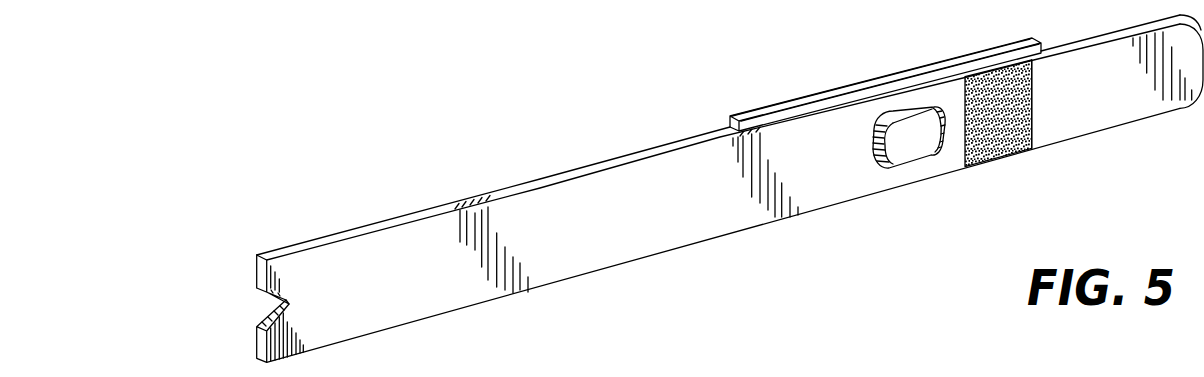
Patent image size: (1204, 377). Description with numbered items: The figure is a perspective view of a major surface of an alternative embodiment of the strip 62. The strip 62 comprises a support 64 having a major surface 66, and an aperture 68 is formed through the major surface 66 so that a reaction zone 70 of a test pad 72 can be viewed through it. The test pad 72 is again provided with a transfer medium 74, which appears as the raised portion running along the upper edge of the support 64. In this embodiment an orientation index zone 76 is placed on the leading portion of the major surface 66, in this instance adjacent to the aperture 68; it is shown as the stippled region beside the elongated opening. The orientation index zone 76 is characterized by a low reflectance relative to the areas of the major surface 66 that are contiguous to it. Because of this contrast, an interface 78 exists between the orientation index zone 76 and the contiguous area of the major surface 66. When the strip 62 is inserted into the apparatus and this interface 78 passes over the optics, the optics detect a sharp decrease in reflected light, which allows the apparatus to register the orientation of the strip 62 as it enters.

The strip 62 is at (385, 163).
The support 64 is at (572, 175).
The major surface 66 is at (655, 218).
The aperture 68 is at (880, 137).
The reaction zone 70 is at (917, 137).
The test pad 72 is at (900, 78).
The transfer medium 74 is at (800, 102).
The orientation index zone 76 is at (997, 128).
The interface 78 is at (1032, 124).